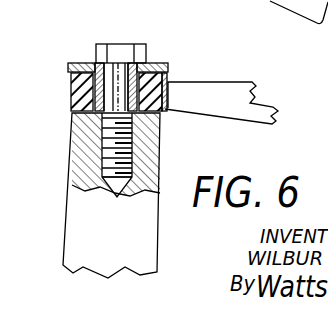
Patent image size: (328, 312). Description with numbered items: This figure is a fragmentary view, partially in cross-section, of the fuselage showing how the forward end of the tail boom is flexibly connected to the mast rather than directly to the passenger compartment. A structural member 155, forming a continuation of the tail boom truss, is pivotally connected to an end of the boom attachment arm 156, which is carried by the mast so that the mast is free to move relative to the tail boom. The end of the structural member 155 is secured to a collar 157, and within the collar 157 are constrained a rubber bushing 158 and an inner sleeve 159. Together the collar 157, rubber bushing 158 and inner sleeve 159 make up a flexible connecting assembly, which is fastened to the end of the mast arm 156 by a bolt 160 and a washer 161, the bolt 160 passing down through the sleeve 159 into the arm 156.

The structural members 155 is at (267, 106).
The boom attachment arm 156 is at (70, 194).
The collar 157 is at (71, 90).
The rubber bushing 158 is at (76, 114).
The inner sleeve 159 is at (98, 62).
The bolts 160 is at (112, 47).
The washers 161 is at (153, 62).